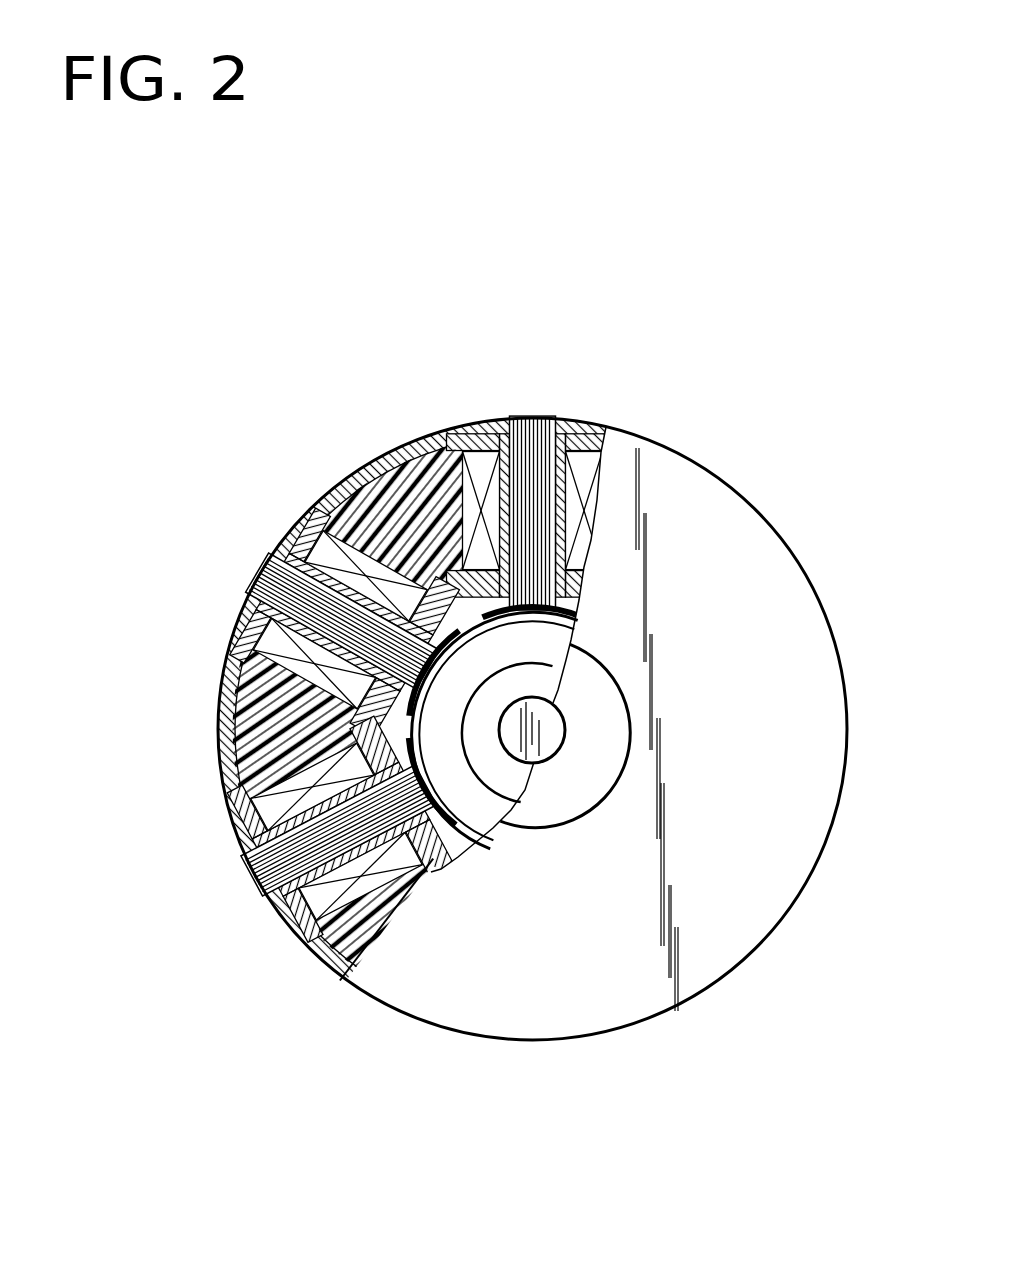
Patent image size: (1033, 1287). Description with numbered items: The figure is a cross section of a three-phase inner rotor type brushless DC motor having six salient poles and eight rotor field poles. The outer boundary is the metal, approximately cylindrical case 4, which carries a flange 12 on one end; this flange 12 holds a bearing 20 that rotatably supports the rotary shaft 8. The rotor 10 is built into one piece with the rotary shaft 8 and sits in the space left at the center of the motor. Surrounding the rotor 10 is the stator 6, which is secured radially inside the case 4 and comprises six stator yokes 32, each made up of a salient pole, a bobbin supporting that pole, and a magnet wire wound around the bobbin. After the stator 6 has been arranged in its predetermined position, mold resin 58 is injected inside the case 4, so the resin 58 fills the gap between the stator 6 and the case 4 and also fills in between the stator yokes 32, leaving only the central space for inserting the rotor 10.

The case 4 is at (590, 430).
The stator 6 is at (454, 669).
The rotary shaft 8 is at (545, 727).
The rotor 10 is at (480, 808).
The flange 12 is at (775, 592).
The bearing 20 is at (580, 795).
The stator yoke 32 is at (529, 400).
The resin 58 is at (398, 490).